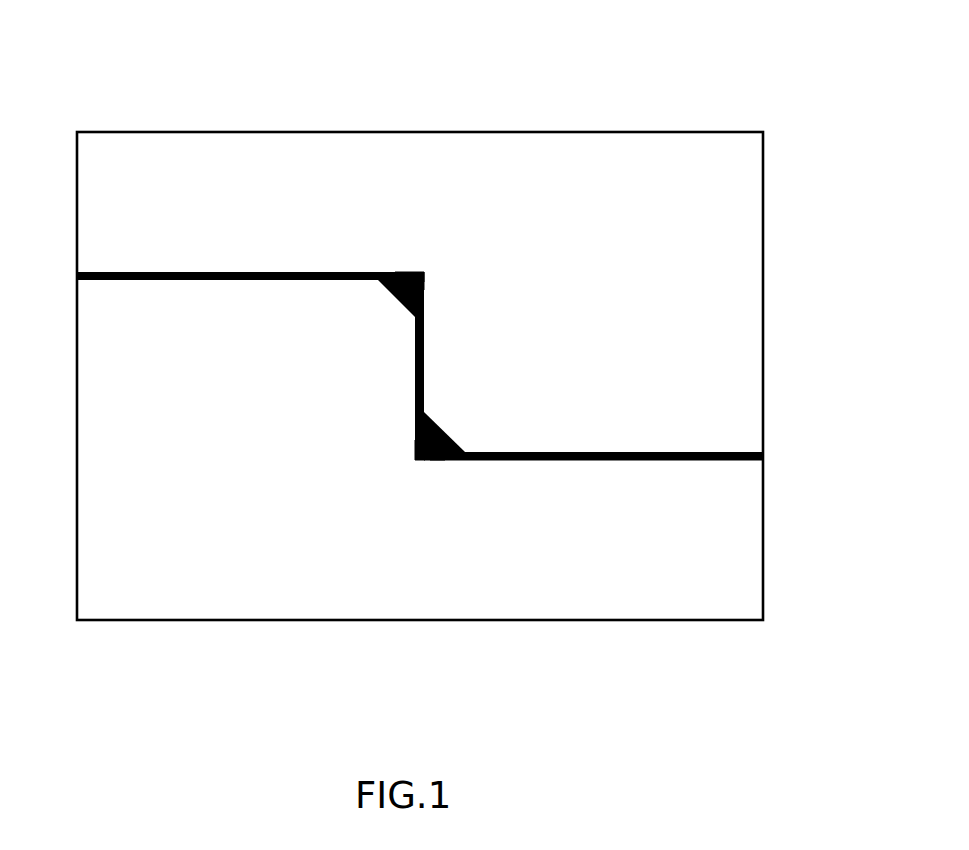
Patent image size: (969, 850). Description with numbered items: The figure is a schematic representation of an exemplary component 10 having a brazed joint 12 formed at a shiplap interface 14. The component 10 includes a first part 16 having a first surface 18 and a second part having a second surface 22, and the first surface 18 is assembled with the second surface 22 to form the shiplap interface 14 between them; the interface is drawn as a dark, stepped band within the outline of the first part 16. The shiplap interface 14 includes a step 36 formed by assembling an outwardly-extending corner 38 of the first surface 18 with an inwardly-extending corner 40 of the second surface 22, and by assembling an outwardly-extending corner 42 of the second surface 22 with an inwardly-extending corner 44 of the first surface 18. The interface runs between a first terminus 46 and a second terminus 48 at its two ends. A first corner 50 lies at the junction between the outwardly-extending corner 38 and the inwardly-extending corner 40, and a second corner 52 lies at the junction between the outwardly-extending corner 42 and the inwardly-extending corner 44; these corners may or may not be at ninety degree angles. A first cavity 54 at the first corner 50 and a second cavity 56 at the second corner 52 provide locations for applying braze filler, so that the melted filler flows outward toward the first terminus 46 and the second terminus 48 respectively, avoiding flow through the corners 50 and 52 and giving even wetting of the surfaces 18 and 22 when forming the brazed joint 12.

The component 10 is at (429, 313).
The brazed joint 12 is at (526, 452).
The shiplap interface 14 is at (429, 362).
The first part 16 is at (723, 221).
The first surface 18 is at (252, 272).
The second surface 22 is at (617, 460).
The step 36 is at (415, 388).
The outwardly-extending corner of the first surface 38 is at (445, 432).
The inwardly-extending corner of the second surface 40 is at (415, 460).
The outwardly-extending corner of the second surface 42 is at (396, 298).
The inwardly-extending corner of the first surface 44 is at (424, 272).
The first terminus 46 is at (763, 455).
The second terminus 48 is at (77, 276).
The first corner 50 is at (415, 455).
The second corner 52 is at (424, 273).
The first cavity 54 is at (438, 460).
The second cavity 56 is at (400, 272).